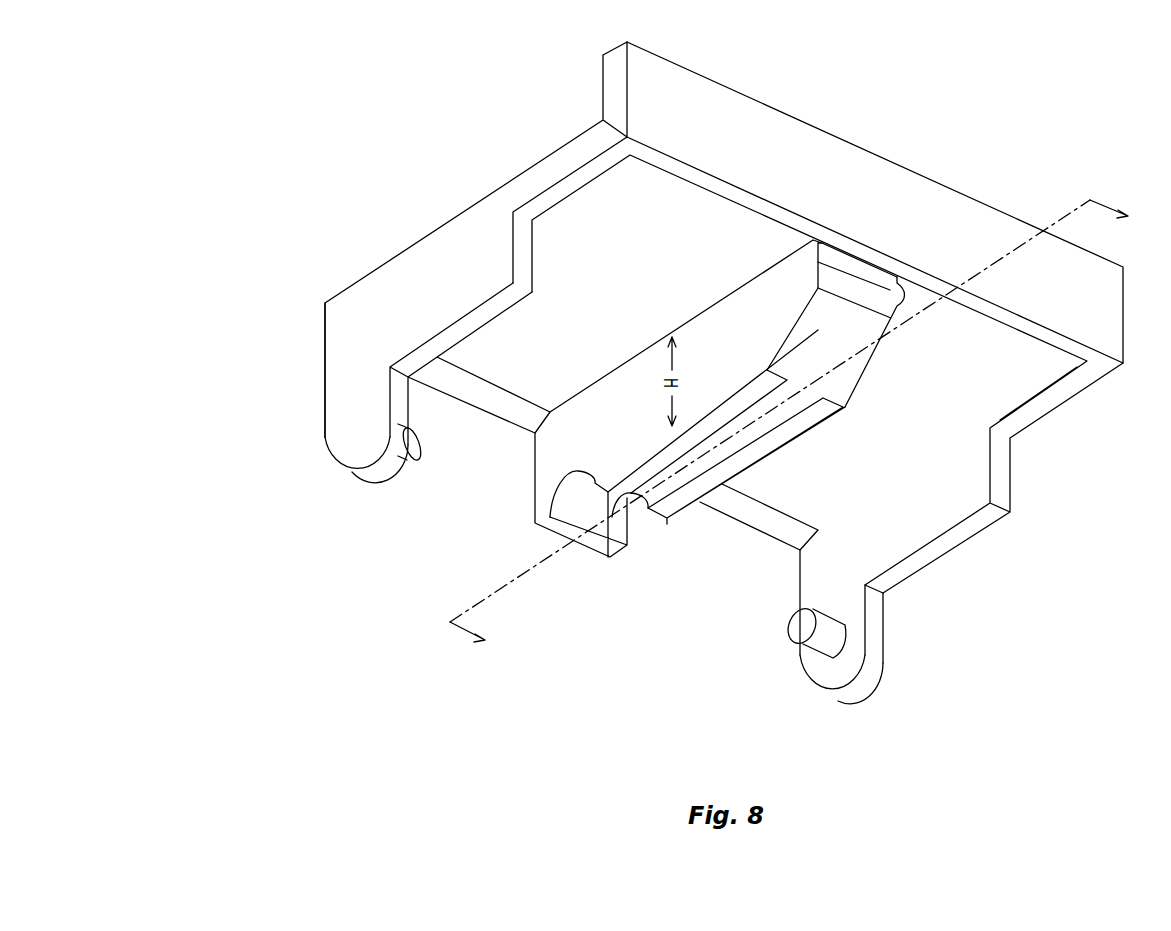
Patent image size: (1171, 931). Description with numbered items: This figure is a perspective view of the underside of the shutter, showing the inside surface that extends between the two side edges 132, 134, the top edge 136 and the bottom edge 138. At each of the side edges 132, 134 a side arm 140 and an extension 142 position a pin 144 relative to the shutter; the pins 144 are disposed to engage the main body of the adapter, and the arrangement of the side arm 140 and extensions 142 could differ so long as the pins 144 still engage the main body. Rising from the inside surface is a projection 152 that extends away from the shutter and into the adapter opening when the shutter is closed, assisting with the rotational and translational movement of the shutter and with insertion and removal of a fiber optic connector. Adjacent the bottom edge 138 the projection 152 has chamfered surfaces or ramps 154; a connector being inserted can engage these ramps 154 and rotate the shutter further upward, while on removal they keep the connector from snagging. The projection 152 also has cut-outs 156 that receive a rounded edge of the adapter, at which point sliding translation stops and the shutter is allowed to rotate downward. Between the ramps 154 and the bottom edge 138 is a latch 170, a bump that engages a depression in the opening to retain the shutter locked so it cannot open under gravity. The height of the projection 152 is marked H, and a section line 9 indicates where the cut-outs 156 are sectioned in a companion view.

The side edge 132 is at (1077, 397).
The side edge 134 is at (428, 232).
The top edge 136 is at (490, 413).
The bottom edge 138 is at (990, 205).
The side arm 140 is at (415, 310).
The extension 142 is at (345, 432).
The pin 144 is at (418, 462).
The projection 152 is at (669, 545).
The chamfered surfaces or ramps 154 is at (793, 352).
The cut-outs 156 is at (620, 527).
The latch 170 is at (866, 300).
The section line 9- 9 is at (789, 417).